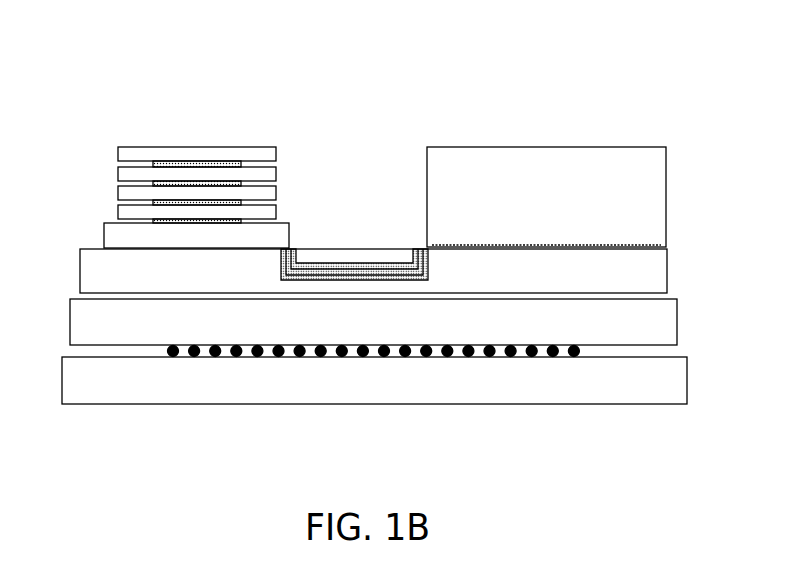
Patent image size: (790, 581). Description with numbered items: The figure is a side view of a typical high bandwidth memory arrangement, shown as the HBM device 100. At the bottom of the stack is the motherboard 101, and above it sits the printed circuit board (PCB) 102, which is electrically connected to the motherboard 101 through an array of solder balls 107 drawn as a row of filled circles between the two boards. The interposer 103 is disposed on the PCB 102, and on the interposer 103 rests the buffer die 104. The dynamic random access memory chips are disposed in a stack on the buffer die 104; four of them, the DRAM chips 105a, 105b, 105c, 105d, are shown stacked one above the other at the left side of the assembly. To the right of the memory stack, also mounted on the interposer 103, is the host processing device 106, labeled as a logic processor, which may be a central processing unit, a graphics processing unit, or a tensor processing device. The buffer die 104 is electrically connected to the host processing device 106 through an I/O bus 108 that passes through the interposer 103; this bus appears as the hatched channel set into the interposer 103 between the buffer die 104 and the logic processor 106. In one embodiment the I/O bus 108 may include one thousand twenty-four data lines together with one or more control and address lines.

The HBM device 100 is at (208, 89).
The motherboard 101 is at (565, 383).
The printed circuit board (PCB) 102 is at (590, 326).
The interposer 103 is at (620, 279).
The buffer die 104 is at (112, 230).
The DRAM chip 105a is at (127, 213).
The DRAM chip 105b is at (127, 194).
The DRAM chip 105c is at (127, 174).
The DRAM chip 105d is at (127, 154).
The host processing device (logic processor) 106 is at (548, 180).
The solder balls 107 is at (257, 357).
The I/O bus 108 is at (353, 268).